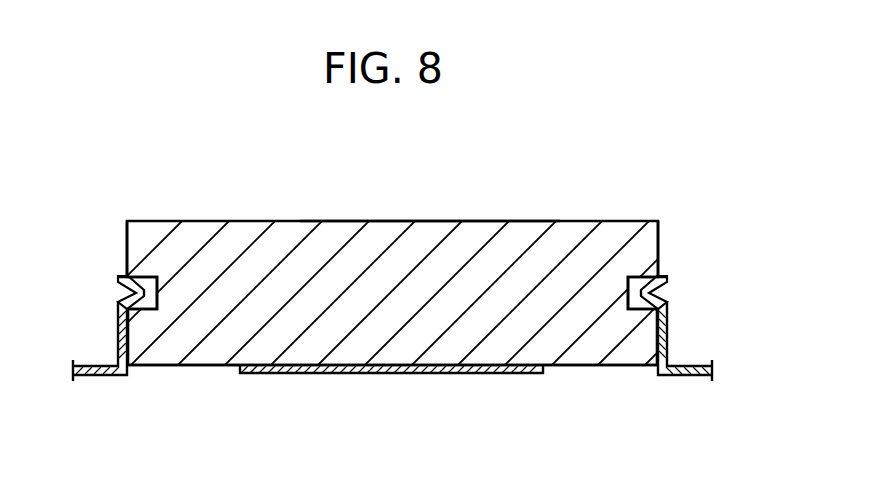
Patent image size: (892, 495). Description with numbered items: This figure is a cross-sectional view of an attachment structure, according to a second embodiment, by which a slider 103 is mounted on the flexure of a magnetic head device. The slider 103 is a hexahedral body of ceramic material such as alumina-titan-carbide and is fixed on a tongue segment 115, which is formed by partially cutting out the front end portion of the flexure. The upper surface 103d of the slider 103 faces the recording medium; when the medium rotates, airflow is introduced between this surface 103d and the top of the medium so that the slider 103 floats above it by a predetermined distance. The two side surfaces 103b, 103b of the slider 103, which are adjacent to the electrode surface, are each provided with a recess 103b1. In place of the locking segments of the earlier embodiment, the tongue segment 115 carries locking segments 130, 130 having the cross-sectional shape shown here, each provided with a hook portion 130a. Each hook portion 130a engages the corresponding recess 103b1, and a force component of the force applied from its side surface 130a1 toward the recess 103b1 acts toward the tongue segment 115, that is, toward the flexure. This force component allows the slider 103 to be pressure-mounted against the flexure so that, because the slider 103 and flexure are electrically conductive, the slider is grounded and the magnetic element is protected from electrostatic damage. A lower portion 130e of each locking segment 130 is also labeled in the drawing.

The slider 103 is at (434, 205).
The surface of the slider facing the recording medium 103d is at (532, 221).
The side surface 103b is at (127, 233).
The recess 103b1 is at (146, 292).
The locking segment 130 is at (118, 326).
The hook portion 130a is at (120, 295).
The side surface of the hook portion 130a1 is at (142, 298).
The bottom portion of holding member 130e is at (570, 367).
The tongue segment 115 is at (440, 376).